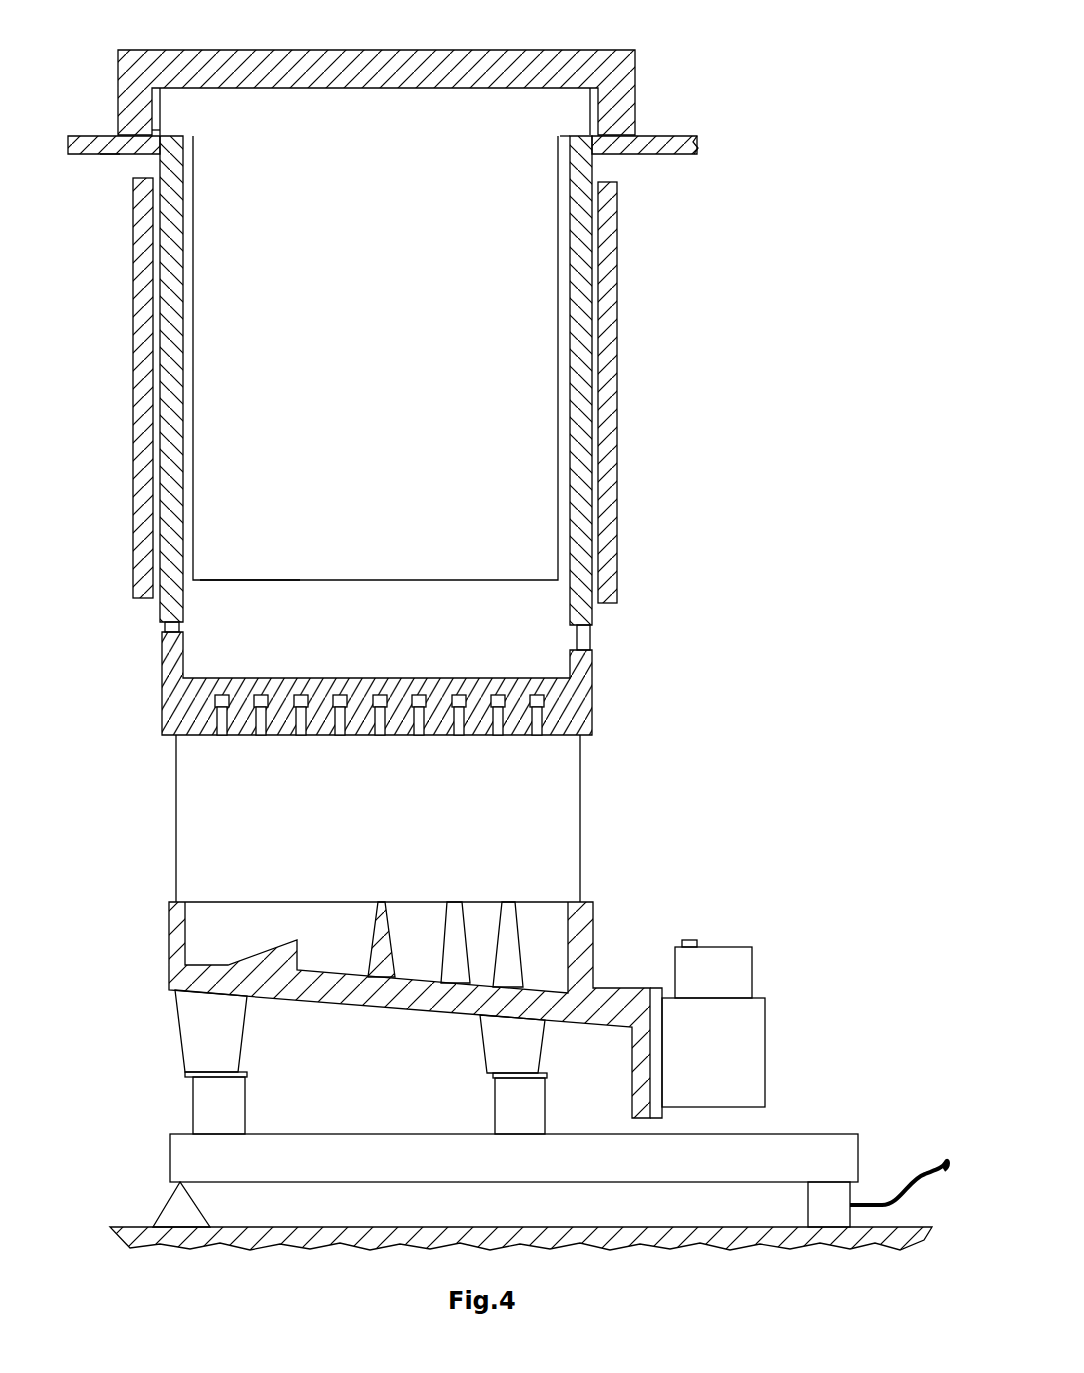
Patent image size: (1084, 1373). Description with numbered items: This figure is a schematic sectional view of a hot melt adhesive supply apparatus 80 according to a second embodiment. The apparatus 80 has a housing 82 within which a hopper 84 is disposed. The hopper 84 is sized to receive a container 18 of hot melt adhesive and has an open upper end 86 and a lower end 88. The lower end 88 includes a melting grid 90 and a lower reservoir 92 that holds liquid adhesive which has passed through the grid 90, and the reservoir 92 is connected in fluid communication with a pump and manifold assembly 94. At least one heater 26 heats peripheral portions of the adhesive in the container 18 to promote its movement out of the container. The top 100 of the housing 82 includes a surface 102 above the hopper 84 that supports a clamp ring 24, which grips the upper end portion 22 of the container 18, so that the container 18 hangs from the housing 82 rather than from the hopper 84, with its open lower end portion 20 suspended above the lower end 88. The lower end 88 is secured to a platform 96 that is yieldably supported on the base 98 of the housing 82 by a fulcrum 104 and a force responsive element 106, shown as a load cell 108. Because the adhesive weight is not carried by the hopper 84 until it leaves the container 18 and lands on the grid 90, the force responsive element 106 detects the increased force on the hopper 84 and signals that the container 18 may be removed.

The container 18 is at (210, 355).
The open lower end portion 20 is at (218, 582).
The upper end portion 22 is at (412, 185).
The clamp ring 24 is at (298, 100).
The heater 26 is at (133, 285).
The apparatus 80 is at (688, 193).
The housing 82 is at (89, 129).
The hopper 84 is at (598, 420).
The open upper end 86 is at (563, 140).
The lower end 88 is at (672, 818).
The melting grid 90 is at (525, 690).
The lower reservoir 92 is at (178, 806).
The pump and manifold assembly 94 is at (730, 940).
The platform 96 is at (820, 1145).
The base 98 is at (130, 1226).
The top 100 is at (101, 134).
The surface 102 is at (110, 155).
The fulcrum 104 is at (156, 1192).
The force responsive element 106 is at (802, 1208).
The load cell 108 is at (472, 48).